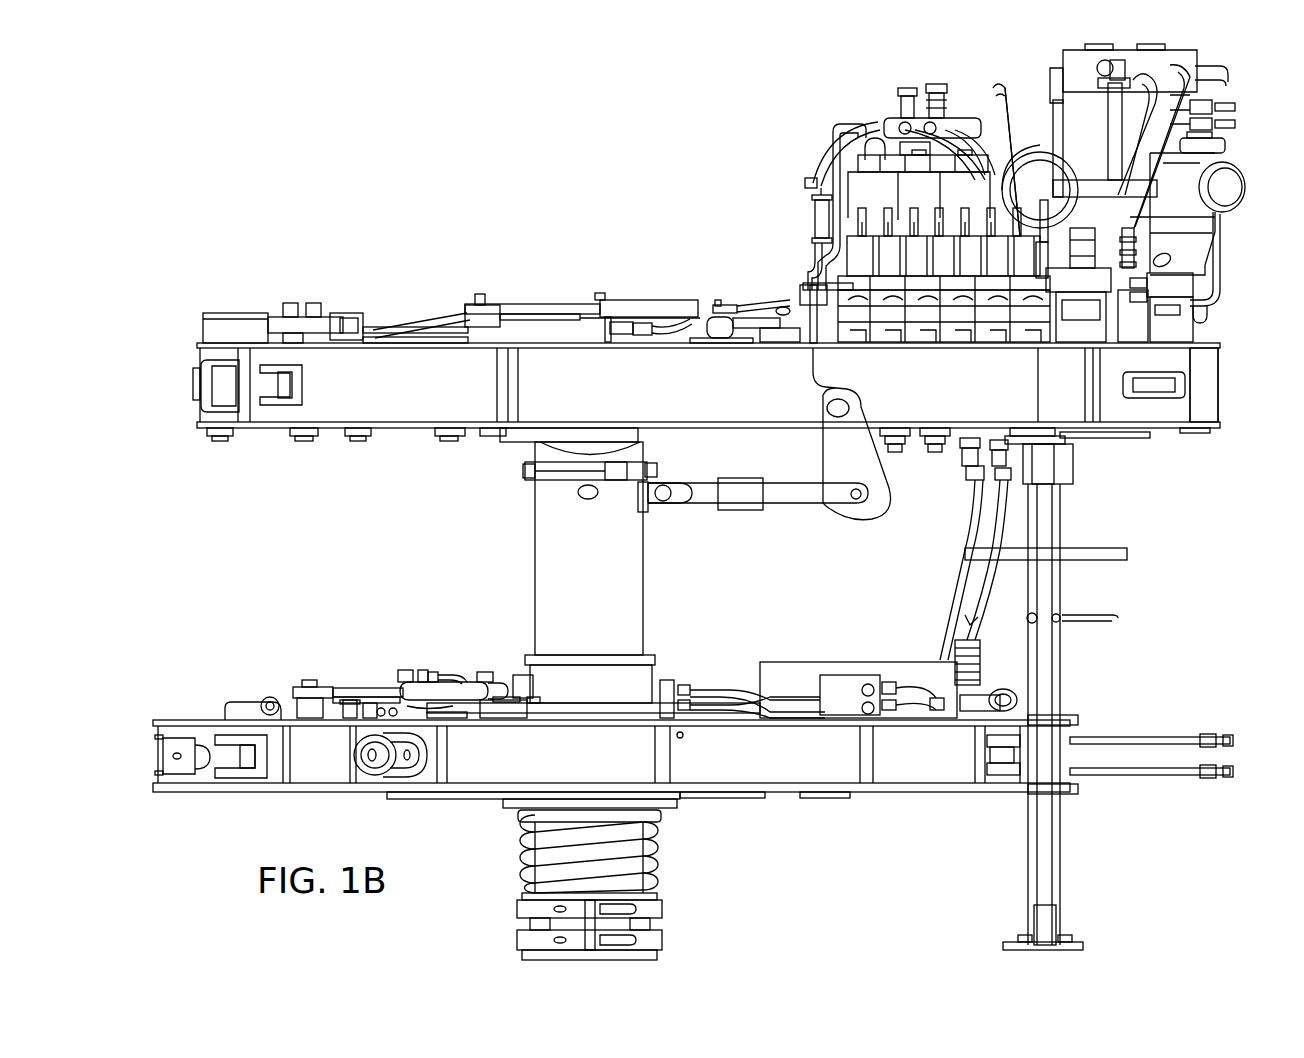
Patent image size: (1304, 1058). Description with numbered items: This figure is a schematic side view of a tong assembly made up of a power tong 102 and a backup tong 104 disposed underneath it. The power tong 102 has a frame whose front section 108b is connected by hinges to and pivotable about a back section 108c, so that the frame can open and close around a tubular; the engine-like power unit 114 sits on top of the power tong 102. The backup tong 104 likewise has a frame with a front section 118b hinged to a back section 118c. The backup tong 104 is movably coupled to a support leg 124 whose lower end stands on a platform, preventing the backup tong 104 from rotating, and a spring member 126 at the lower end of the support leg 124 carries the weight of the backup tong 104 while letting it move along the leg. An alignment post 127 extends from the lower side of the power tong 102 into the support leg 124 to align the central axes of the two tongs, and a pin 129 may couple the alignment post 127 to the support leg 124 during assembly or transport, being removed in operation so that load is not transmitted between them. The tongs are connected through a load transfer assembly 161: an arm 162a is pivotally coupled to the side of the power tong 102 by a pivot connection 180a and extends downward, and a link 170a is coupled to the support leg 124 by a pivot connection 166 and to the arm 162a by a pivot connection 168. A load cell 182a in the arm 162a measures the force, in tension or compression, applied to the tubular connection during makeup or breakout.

The power tong 102 is at (168, 356).
The backup tong 104 is at (130, 752).
The front section 108b is at (398, 396).
The back section 108c is at (948, 396).
The engine 114 is at (1018, 78).
The front section 118b is at (345, 763).
The back section 118c is at (828, 763).
The support leg 124 is at (613, 605).
The spring member 126 is at (652, 862).
The alignment post 127 is at (537, 446).
The pin 129 is at (579, 495).
The load transfer assembly 161 is at (438, 578).
The arm 162a is at (895, 496).
The pivot connection 166 is at (665, 501).
The pivot connection 168 is at (857, 501).
The link 170a is at (797, 503).
The pivot connection 180a is at (828, 404).
The load cell 182a is at (740, 512).